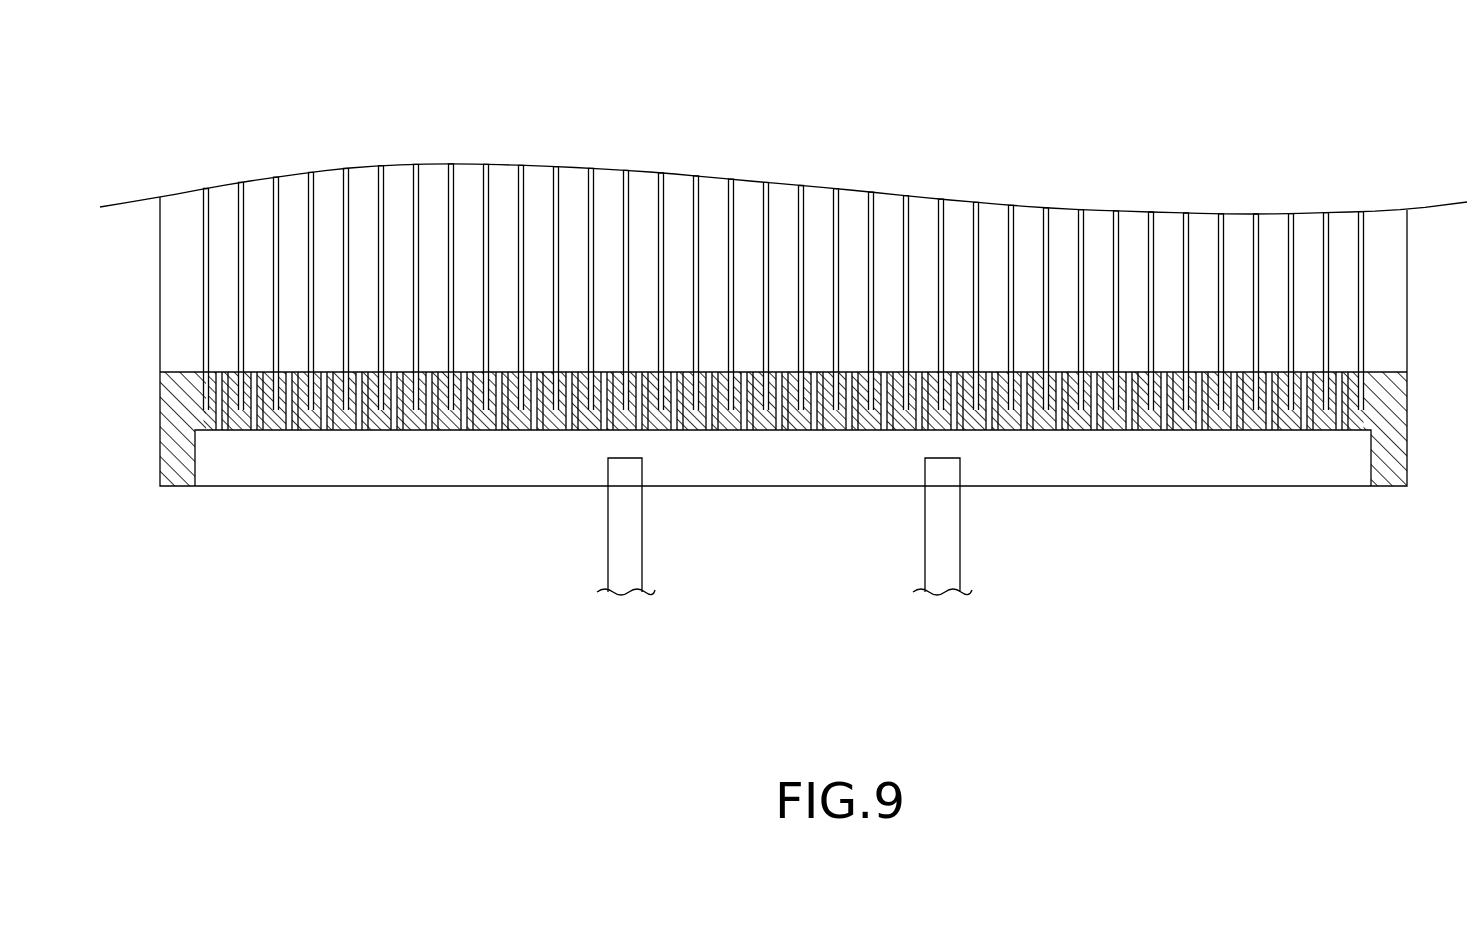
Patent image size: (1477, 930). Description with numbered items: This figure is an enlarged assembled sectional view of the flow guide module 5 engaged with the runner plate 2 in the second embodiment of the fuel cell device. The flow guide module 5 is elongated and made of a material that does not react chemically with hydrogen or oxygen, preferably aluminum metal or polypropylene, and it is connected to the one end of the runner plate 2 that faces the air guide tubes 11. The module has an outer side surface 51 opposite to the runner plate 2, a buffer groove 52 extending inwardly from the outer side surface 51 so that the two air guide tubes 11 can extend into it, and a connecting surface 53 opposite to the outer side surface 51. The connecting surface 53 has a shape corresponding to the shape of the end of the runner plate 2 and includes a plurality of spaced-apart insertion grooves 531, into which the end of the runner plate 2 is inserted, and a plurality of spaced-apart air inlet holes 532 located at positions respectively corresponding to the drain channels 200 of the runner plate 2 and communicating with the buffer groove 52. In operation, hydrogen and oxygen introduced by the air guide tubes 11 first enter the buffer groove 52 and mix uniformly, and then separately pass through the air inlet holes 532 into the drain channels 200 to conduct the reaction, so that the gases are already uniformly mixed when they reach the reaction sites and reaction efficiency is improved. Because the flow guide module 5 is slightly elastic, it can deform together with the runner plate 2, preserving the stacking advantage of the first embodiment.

The runner plate 2 is at (1097, 176).
The drain channel 200 is at (927, 210).
The flow guide module 5 is at (815, 422).
The outer side surface 51 is at (1388, 487).
The buffer groove 52 is at (338, 475).
The connecting surface 53 is at (815, 444).
The insertion grooves 531 is at (1293, 422).
The air inlet holes 532 is at (818, 418).
The air guide tubes 11 is at (621, 552).